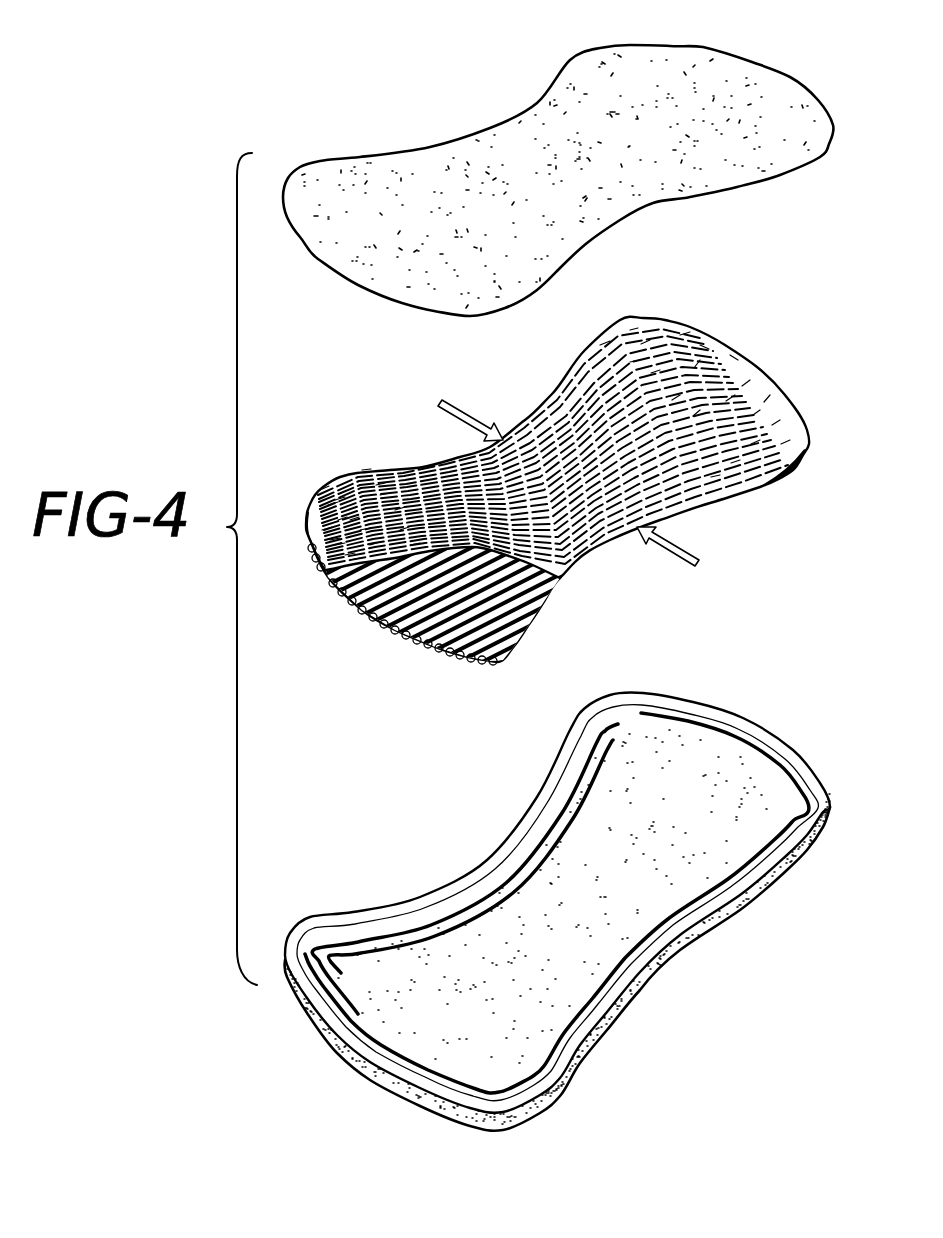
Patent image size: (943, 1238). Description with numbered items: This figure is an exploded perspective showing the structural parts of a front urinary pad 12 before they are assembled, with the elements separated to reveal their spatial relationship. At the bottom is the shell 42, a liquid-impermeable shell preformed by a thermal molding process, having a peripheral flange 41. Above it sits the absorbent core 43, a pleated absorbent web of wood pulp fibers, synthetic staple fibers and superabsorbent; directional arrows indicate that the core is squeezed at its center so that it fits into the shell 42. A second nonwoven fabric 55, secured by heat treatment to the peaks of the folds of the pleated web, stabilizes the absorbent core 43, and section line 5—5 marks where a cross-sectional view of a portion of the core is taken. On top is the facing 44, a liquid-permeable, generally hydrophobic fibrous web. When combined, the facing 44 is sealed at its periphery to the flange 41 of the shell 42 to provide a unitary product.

The front urinary pad 12 is at (225, 397).
The facing 44 is at (513, 107).
The absorbent core 43 is at (773, 370).
The second nonwoven fabric 55 is at (353, 490).
The section line 5— 5 is at (672, 431).
The flange 41 is at (558, 897).
The shell 42 is at (678, 950).